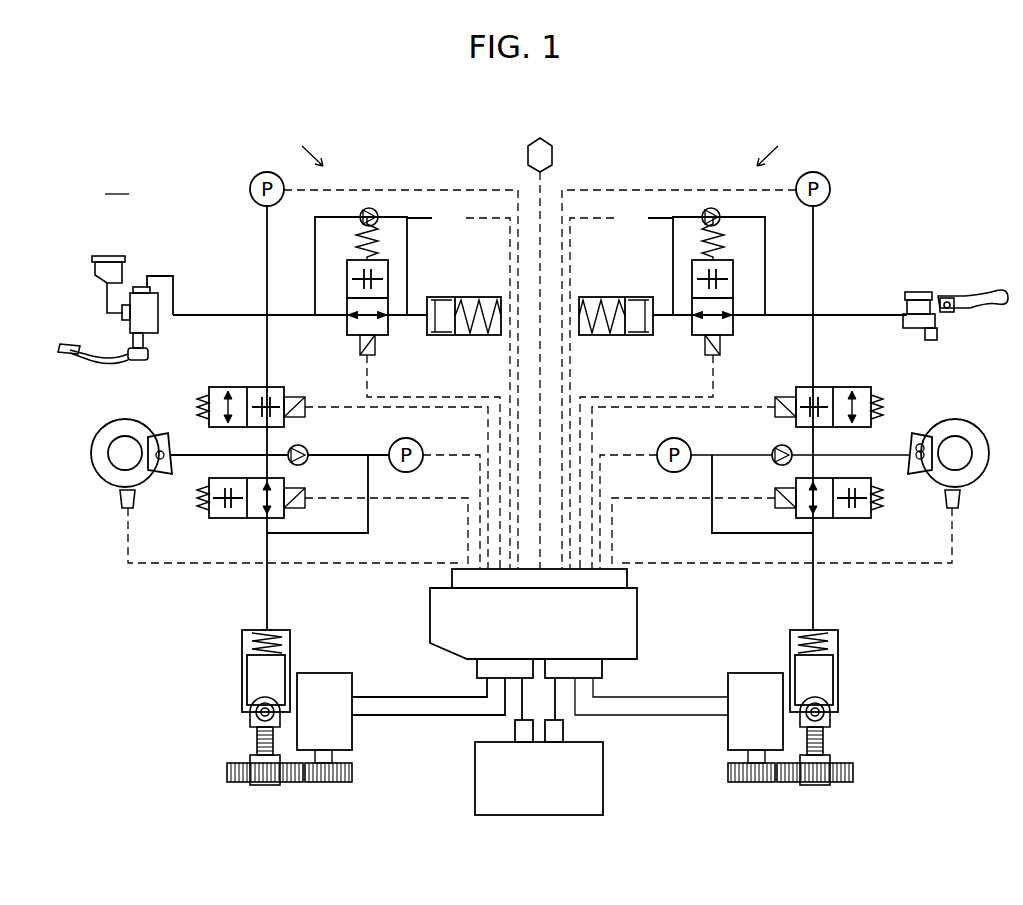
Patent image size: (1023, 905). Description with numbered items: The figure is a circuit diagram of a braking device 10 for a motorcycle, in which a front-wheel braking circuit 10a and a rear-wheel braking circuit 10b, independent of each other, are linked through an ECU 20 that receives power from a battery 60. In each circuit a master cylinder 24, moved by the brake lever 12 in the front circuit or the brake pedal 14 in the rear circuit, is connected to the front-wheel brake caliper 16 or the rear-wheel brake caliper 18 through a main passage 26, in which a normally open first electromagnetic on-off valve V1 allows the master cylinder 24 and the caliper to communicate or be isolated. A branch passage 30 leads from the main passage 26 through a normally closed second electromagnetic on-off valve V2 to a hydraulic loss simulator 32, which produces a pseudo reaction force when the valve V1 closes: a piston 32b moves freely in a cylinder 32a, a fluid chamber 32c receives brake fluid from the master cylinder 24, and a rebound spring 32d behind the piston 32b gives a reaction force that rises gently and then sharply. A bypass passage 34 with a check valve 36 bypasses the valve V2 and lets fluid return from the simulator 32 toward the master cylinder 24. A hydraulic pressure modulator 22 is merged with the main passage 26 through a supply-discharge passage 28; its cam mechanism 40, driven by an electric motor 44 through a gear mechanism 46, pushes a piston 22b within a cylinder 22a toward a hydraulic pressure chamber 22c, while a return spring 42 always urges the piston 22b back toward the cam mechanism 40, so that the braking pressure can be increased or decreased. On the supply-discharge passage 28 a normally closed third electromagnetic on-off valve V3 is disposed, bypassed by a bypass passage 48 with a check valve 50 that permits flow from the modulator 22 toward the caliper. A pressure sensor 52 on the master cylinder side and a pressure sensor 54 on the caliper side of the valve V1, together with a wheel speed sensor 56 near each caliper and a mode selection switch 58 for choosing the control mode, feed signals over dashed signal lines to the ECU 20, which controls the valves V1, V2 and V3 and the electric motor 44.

The braking device 10 is at (117, 183).
The front-wheel braking circuit 10a is at (789, 146).
The rear-wheel braking circuit 10b is at (293, 146).
The brake lever 12 is at (990, 296).
The brake pedal 14 is at (72, 343).
The front-wheel brake caliper 16 is at (924, 438).
The rear-wheel brake caliper 18 is at (154, 436).
The ECU 20 is at (637, 603).
The hydraulic pressure modulator 22 is at (542, 660).
The cylinder 22a is at (243, 693).
The piston 22b is at (255, 672).
The hydraulic pressure chamber 22c is at (245, 641).
The master cylinder 24 is at (160, 298).
The main passage 26 is at (269, 342).
The supply-discharge passage 28 is at (262, 555).
The branch passage 30 is at (289, 313).
The hydraulic loss simulator 32 is at (549, 313).
The cylinder 32a is at (483, 337).
The piston 32b is at (443, 337).
The fluid chamber 32c is at (428, 297).
The rebound spring 32d is at (481, 305).
The bypass passage 34 is at (315, 245).
The check valve 36 is at (363, 208).
The cam mechanism 40 is at (255, 719).
The return spring 42 is at (270, 629).
The electric motor 44 is at (341, 673).
The gear mechanism 46 is at (228, 773).
The bypass passage 48 is at (368, 527).
The check valve 50 is at (303, 448).
The pressure sensor 52 is at (250, 190).
The pressure sensor 54 is at (416, 445).
The wheel speed sensor 56 is at (118, 498).
The mode selection switch 58 is at (548, 142).
The battery 60 is at (603, 759).
The first electromagnetic on-off valve V1 is at (247, 387).
The second electromagnetic on-off valve V2 is at (347, 262).
The third electromagnetic on-off valve V3 is at (213, 518).